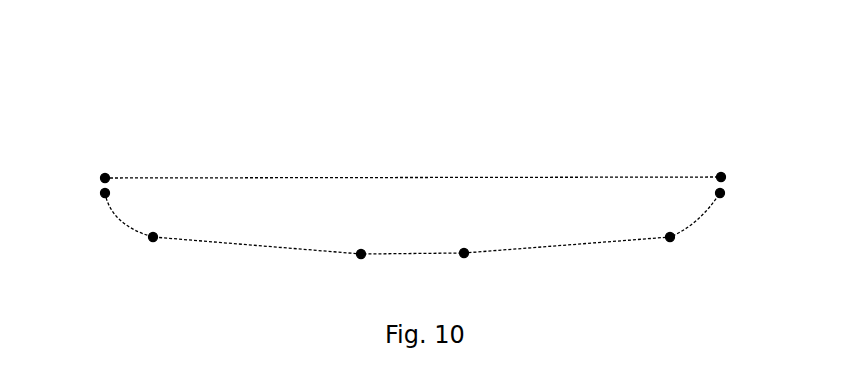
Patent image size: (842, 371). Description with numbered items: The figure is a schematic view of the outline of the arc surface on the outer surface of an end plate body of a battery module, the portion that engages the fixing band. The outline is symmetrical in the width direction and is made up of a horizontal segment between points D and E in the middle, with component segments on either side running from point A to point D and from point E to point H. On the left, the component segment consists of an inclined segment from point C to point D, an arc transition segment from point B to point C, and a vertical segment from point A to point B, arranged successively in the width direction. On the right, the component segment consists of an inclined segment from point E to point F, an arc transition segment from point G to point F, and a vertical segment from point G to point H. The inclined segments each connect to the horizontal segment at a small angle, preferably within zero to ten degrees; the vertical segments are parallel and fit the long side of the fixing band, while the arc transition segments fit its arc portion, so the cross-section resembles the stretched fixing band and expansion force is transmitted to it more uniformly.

The point A is at (102, 174).
The point B is at (103, 196).
The point C is at (154, 241).
The point D is at (362, 258).
The point E is at (466, 257).
The point F is at (673, 240).
The point G is at (723, 197).
The point H is at (724, 175).